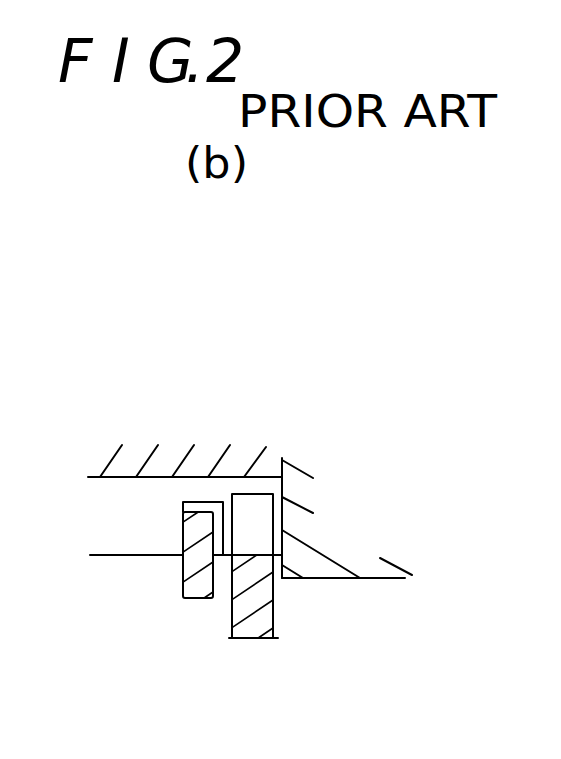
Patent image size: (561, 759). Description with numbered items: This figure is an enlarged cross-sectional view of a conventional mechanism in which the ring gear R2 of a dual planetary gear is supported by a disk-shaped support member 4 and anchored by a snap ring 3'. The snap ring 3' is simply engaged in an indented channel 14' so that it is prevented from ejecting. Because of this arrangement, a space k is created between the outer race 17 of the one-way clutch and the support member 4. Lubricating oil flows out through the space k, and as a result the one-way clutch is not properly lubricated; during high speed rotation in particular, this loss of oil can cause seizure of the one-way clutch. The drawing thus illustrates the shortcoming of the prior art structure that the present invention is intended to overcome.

The ring gear R2 is at (95, 502).
The indented channel 14' is at (199, 470).
The snap ring 3' is at (169, 578).
The support member 4 is at (250, 633).
The space k is at (283, 505).
The outer race 17 is at (327, 517).